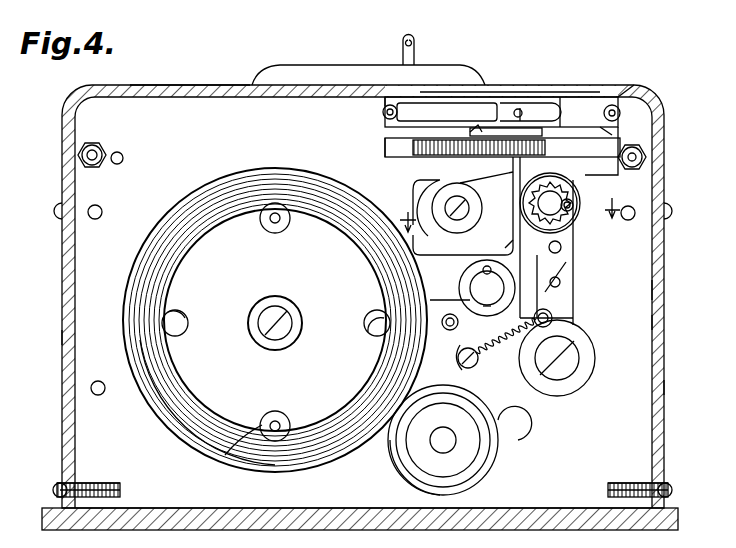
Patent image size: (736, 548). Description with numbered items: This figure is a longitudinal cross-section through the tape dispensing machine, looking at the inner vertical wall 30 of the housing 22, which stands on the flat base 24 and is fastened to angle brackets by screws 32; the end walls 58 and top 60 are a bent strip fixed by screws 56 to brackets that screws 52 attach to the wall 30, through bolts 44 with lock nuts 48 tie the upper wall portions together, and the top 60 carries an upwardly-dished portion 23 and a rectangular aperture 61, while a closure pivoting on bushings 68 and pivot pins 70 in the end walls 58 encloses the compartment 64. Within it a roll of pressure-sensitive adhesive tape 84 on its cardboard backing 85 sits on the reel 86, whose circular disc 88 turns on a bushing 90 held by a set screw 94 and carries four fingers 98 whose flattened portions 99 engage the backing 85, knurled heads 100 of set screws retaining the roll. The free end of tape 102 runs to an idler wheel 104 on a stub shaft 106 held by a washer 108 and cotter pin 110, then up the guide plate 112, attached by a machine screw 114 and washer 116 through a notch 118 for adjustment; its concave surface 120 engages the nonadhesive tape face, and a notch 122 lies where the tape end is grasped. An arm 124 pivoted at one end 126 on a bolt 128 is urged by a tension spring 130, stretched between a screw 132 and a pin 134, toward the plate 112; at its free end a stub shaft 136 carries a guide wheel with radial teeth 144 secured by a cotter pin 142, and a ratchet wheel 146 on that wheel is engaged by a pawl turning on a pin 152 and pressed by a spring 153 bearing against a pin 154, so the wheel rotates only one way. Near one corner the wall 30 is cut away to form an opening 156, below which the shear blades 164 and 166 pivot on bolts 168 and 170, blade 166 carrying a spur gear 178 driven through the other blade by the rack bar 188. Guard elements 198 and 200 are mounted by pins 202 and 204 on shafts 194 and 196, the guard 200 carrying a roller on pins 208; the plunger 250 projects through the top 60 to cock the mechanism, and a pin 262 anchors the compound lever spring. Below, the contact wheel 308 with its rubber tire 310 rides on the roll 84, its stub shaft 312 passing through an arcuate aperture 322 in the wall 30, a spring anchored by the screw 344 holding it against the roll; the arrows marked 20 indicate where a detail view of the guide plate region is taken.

The direction arrows 20 is at (503, 214).
The housing 22 is at (56, 293).
The upwardly-dished portion 23 is at (318, 68).
The base 24 is at (185, 520).
The inner vertical wall 30 is at (652, 290).
The screws 32 is at (120, 490).
The through bolts 44 is at (92, 165).
The lock nuts 48 is at (96, 146).
The screws 52 is at (100, 218).
The screws 56 is at (58, 210).
The end walls 58 is at (62, 335).
The top 60 is at (200, 88).
The rectangular aperture 61 is at (575, 90).
The second compartment 64 is at (636, 325).
The bushings 68 is at (92, 483).
The pivot pins 70 is at (56, 490).
The roll of pressure-sensitive adhesive tape 84 is at (220, 195).
The cylindrical backing 85 is at (195, 240).
The reel 86 is at (200, 401).
The circular disc 88 is at (232, 455).
The bushing 90 is at (262, 298).
The set screw 94 is at (284, 330).
The projecting fingers 98 is at (182, 330).
The flattened portion 99 is at (178, 312).
The knurled heads 100 is at (282, 230).
The free end of tape 102 is at (450, 330).
The idler wheel 104 is at (462, 270).
The stub shaft 106 is at (472, 290).
The washer 108 is at (543, 309).
The cotter pin 110 is at (505, 255).
The guide plate 112 is at (460, 184).
The machine screw 114 is at (502, 235).
The washer 116 is at (466, 203).
The notch 118 is at (430, 196).
The transversely concave surface 120 is at (516, 206).
The notch 122 is at (508, 172).
The arm 124 is at (574, 301).
The pivoted end of arm 126 is at (592, 378).
The bolt 128 is at (558, 380).
The tension spring 130 is at (492, 356).
The screw 132 is at (460, 364).
The pin 134 is at (574, 318).
The stub shaft 136 is at (550, 176).
The cotter pin 142 is at (572, 208).
The teeth 144 is at (578, 182).
The ratchet wheel 146 is at (560, 180).
The pin 152 is at (574, 245).
The spring 153 is at (575, 264).
The pin 154 is at (561, 281).
The rectangular opening 156 is at (620, 130).
The shear blade 164 is at (470, 132).
The shear blade 166 is at (542, 132).
The bolt 168 is at (487, 120).
The bolt 170 is at (524, 113).
The spur gear 178 is at (548, 148).
The rack bar 188 is at (418, 150).
The shaft 194 is at (384, 114).
The shaft 196 is at (622, 118).
The guard element 198 is at (433, 100).
The guard element 200 is at (590, 108).
The pin 202 is at (377, 104).
The pin 204 is at (632, 97).
The pins 208 is at (522, 108).
The plunger 250 is at (416, 46).
The pin 262 is at (120, 163).
The contact wheel 308 is at (468, 462).
The tire 310 is at (415, 485).
The stub shaft 312 is at (446, 436).
The arcuate aperture 322 is at (518, 440).
The screw 344 is at (98, 380).